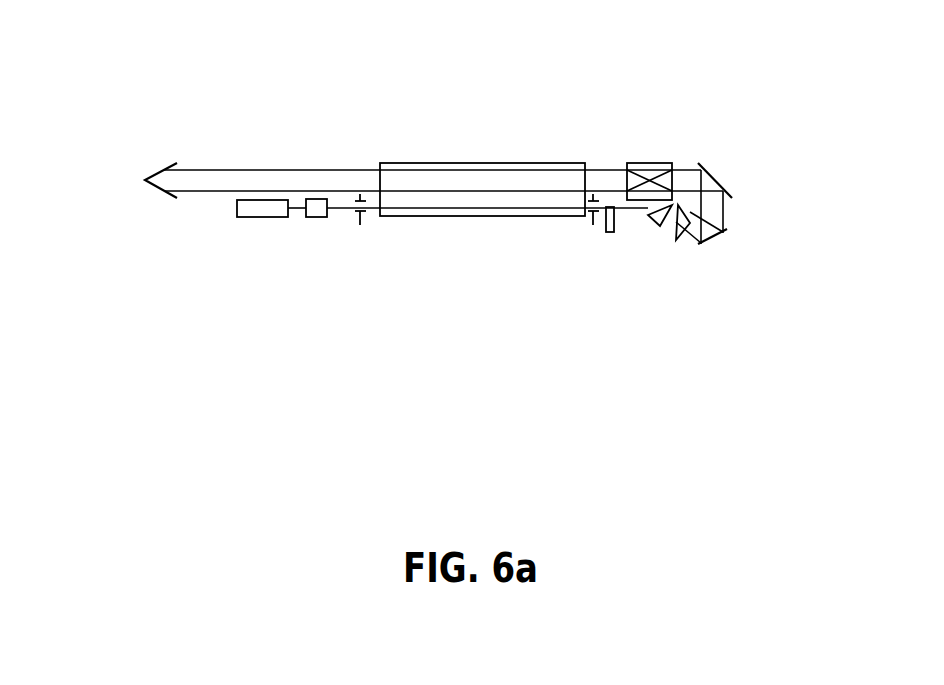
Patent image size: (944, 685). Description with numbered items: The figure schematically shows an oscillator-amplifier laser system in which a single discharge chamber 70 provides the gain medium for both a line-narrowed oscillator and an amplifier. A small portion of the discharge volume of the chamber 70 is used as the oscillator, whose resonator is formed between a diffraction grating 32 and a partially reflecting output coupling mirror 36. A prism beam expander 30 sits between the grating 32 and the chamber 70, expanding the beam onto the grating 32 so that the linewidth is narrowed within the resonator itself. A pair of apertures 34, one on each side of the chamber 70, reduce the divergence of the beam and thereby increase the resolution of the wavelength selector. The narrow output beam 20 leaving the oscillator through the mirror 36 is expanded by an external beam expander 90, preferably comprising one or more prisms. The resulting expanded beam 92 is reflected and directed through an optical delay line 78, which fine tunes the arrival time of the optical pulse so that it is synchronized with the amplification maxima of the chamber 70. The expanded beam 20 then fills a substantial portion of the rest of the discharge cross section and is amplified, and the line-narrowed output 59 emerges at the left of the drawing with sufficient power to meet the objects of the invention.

The output 59 is at (392, 169).
The grating 32 is at (237, 207).
The prism beam expander 30 is at (317, 217).
The output beam 20 is at (633, 210).
The apertures 34 is at (583, 225).
The discharge chamber 70 is at (437, 163).
The partially reflecting output coupling mirror 36 is at (610, 232).
The optical delay line 78 is at (635, 163).
The expanded beam 92 is at (683, 163).
The external beam expander 90 is at (683, 260).